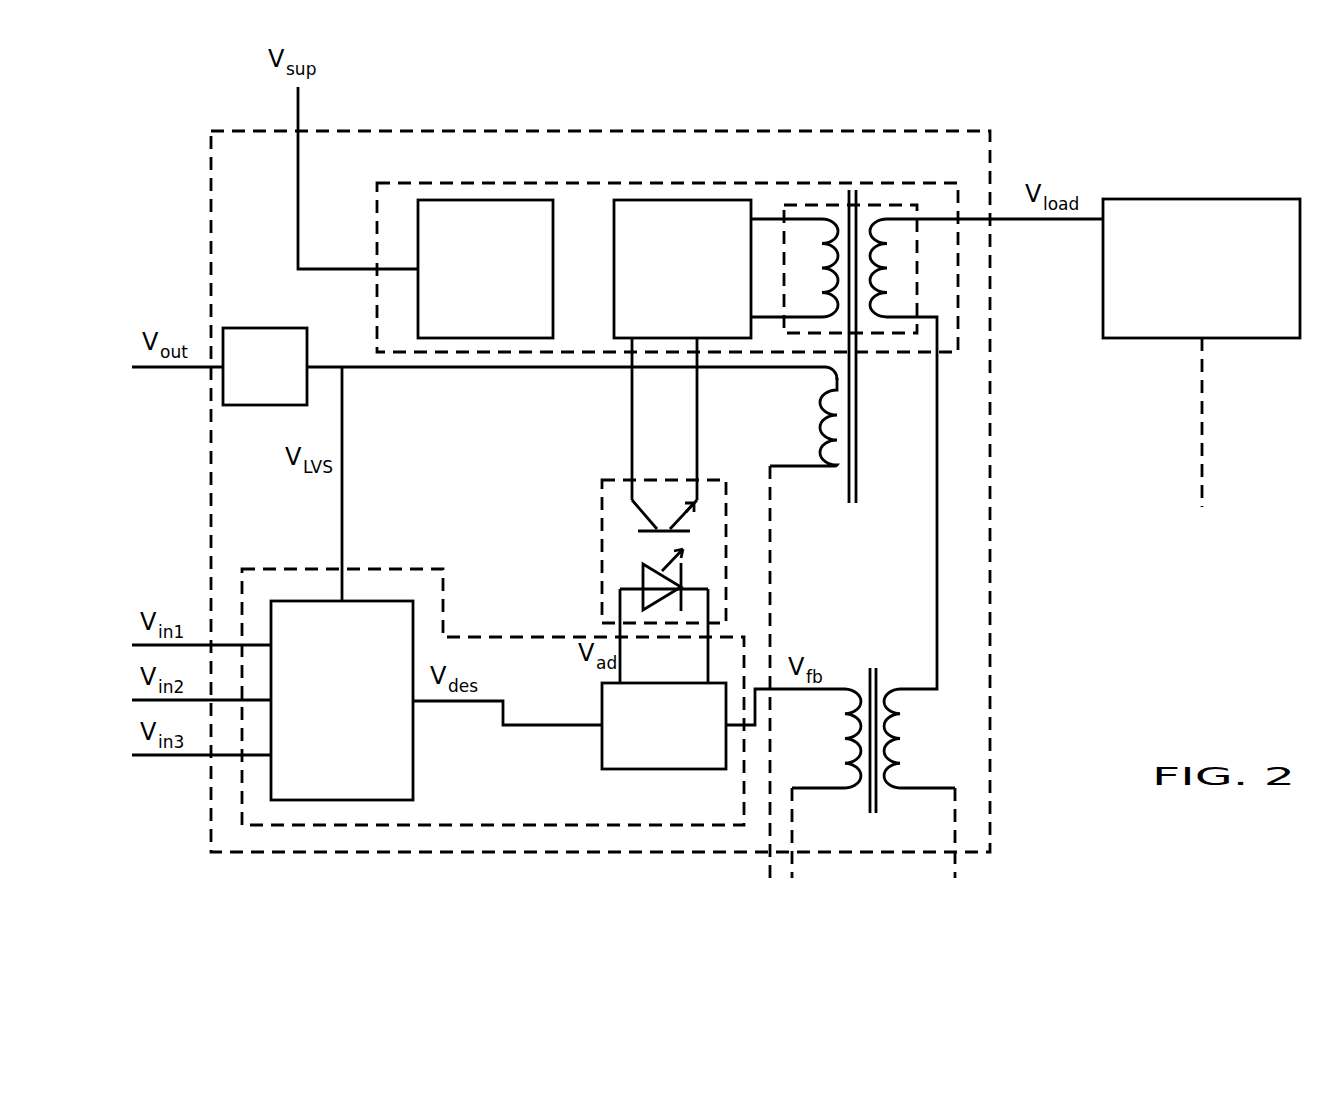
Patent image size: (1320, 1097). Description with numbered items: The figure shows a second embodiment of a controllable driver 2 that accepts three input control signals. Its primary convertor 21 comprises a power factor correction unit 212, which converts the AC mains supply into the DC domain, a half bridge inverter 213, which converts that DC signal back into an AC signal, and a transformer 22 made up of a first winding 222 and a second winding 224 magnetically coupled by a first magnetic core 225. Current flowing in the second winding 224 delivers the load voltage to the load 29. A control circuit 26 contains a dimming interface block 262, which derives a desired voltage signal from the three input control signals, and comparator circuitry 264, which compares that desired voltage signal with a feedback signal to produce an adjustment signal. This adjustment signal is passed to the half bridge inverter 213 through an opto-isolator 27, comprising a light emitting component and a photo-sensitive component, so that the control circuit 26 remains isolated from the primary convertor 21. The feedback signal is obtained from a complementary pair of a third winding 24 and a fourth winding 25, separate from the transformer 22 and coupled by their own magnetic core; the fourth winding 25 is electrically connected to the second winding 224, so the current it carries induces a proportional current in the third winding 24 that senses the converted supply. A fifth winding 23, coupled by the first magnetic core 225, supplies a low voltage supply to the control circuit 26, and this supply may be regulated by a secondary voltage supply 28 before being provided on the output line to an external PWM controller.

The controllable driver 2 is at (211, 200).
The primary convertor 21 is at (377, 200).
The power factor correction unit 212 is at (510, 283).
The half bridge inverter 213 is at (706, 283).
The transformer 22 is at (919, 363).
The first winding 222 is at (822, 218).
The second winding 224 is at (887, 218).
The first magnetic core 225 is at (852, 505).
The fifth winding 23 is at (802, 468).
The third winding 24 is at (821, 790).
The fourth winding 25 is at (908, 740).
The control circuit 26 is at (418, 569).
The dimming interface block 262 is at (366, 714).
The comparator circuitry 264 is at (687, 739).
The opto-isolator 27 is at (602, 508).
The secondary voltage supply 28 is at (281, 380).
The load 29 is at (1216, 282).